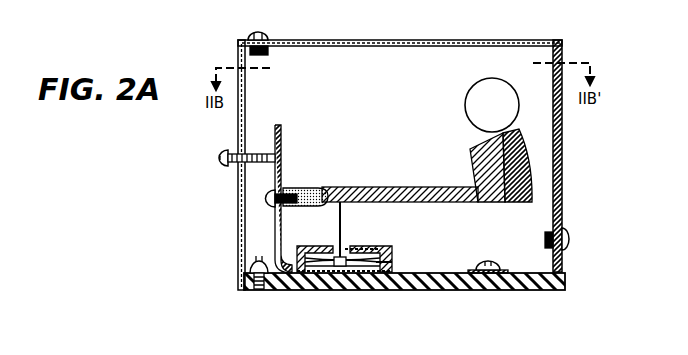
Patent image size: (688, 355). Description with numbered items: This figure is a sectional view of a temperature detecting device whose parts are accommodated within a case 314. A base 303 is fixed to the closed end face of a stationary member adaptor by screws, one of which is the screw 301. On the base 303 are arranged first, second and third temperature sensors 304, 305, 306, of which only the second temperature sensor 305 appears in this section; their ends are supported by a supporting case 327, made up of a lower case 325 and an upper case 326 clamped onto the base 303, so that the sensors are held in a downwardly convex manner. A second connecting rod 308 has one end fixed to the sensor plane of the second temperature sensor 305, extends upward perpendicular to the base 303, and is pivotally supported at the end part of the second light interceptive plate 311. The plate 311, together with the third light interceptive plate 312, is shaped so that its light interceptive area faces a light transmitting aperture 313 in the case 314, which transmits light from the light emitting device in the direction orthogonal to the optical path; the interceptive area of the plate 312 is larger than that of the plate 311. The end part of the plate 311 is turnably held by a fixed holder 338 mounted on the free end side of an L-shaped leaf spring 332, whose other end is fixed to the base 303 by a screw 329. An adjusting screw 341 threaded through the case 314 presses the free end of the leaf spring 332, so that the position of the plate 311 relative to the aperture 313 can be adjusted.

The case 314 is at (397, 40).
The base 303 is at (548, 290).
The screw 329 is at (248, 264).
The L-shaped leaf spring 332 is at (276, 125).
The adjusting screw 341 is at (218, 154).
The fixed holder 338 is at (313, 187).
The second light interceptive plate 311 is at (476, 203).
The third light interceptive plate 312 is at (520, 203).
The light transmitting aperture 313 is at (465, 105).
The second connecting rod 308 is at (338, 226).
The first temperature sensor 304 is at (338, 288).
The second temperature sensor 305 is at (364, 272).
The third temperature sensor 306 is at (370, 298).
The upper case 326 is at (370, 246).
The supporting case 327 is at (391, 250).
The lower case 325 is at (392, 262).
The screw 301 is at (487, 262).